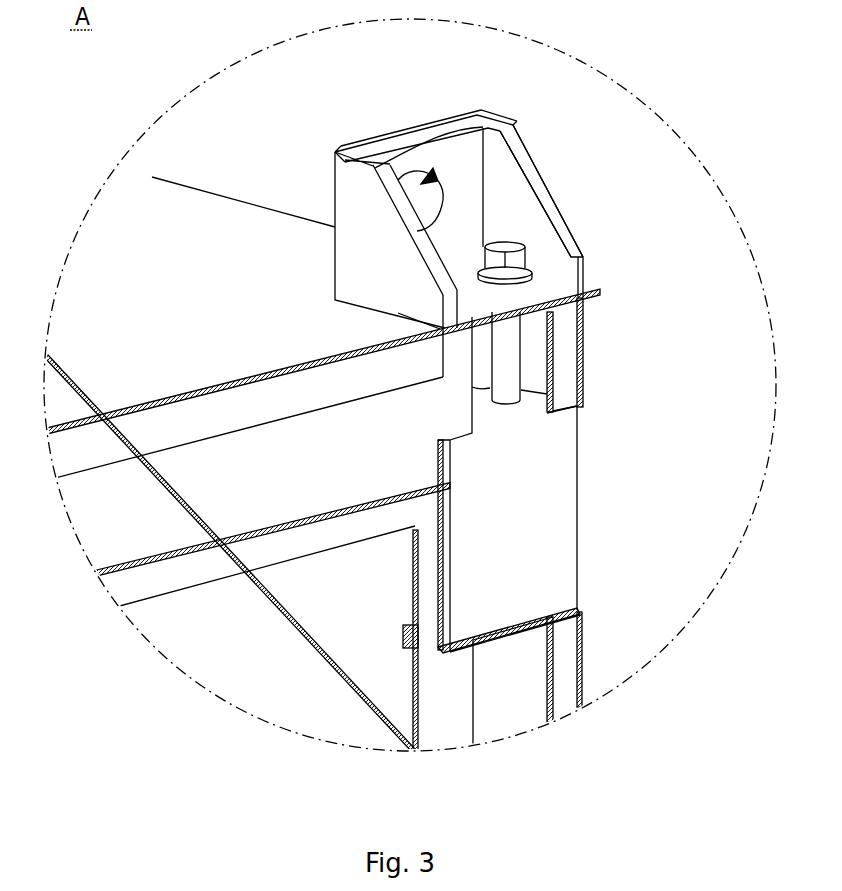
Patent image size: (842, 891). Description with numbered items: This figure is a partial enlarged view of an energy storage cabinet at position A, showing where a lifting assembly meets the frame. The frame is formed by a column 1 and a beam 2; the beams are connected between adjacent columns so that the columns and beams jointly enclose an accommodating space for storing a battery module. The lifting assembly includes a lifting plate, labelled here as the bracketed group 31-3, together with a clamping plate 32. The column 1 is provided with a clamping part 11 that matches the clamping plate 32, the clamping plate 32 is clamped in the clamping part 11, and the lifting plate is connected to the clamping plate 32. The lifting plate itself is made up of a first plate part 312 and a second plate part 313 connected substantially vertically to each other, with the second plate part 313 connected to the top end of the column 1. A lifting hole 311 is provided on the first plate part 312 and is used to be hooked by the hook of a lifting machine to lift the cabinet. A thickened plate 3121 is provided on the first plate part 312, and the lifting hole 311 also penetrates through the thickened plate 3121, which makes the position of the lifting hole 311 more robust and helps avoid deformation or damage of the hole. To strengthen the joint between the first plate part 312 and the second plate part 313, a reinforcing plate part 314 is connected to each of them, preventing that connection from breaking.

The column 1 is at (570, 356).
The clamping part 11 is at (585, 415).
The beam 2 is at (238, 410).
The clamping plate 32 is at (565, 507).
The mounting bracket 31-3 is at (530, 257).
The lifting hole 311 is at (486, 130).
The first plate part 312 is at (477, 187).
The thickened plate 3121 is at (415, 124).
The second plate part 313 is at (565, 272).
The reinforcing plate part 314 is at (545, 205).